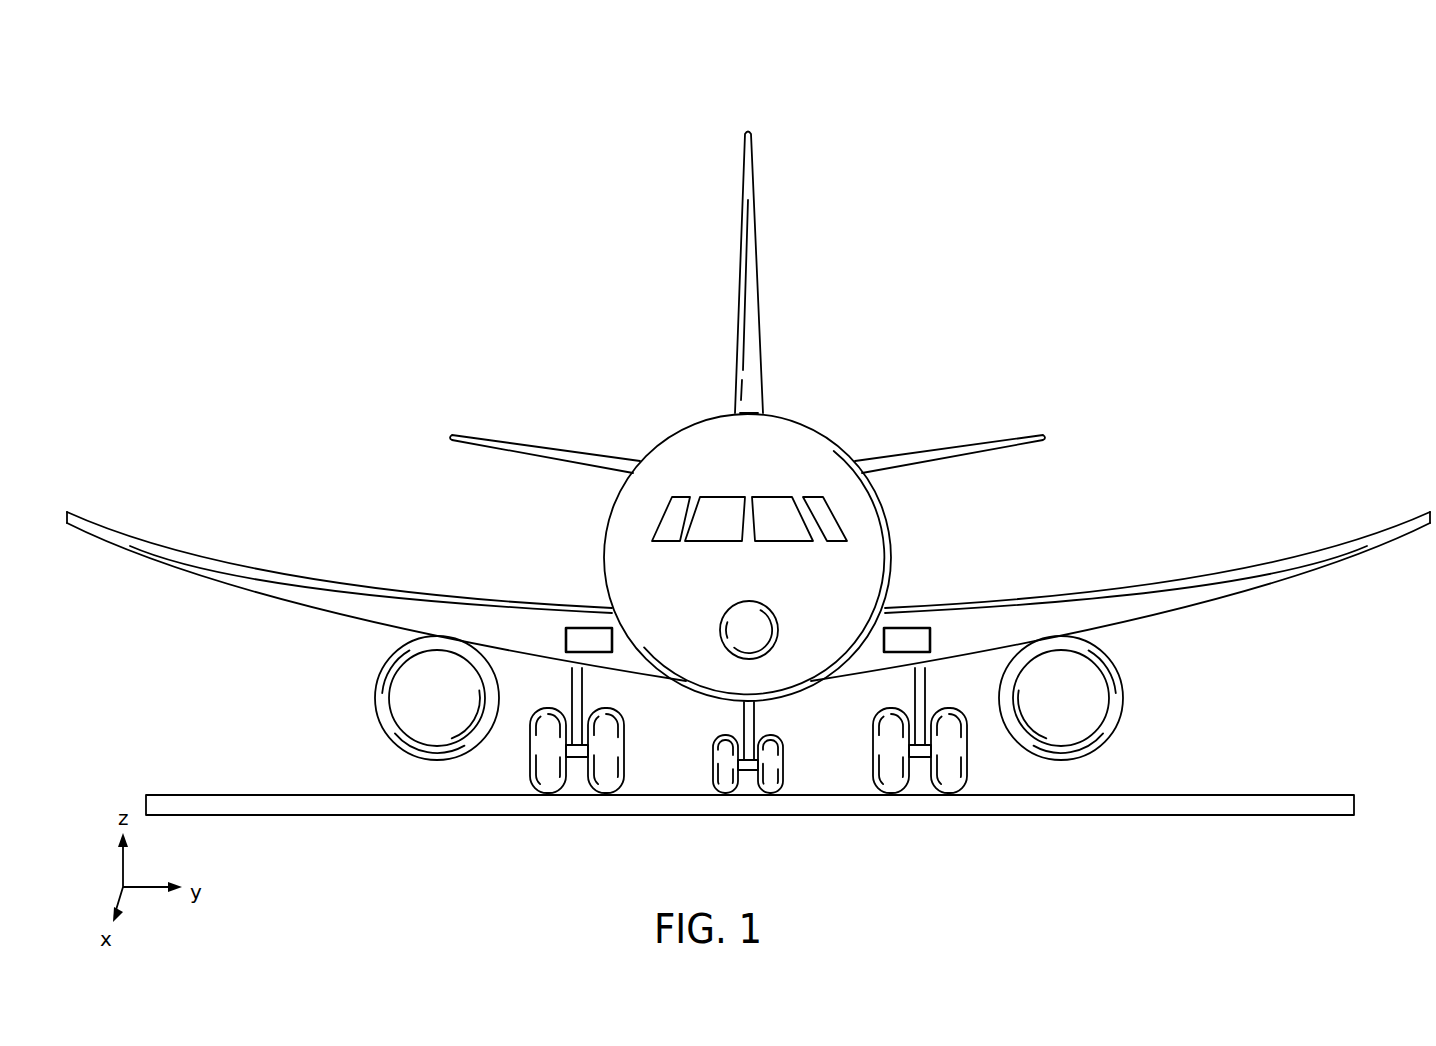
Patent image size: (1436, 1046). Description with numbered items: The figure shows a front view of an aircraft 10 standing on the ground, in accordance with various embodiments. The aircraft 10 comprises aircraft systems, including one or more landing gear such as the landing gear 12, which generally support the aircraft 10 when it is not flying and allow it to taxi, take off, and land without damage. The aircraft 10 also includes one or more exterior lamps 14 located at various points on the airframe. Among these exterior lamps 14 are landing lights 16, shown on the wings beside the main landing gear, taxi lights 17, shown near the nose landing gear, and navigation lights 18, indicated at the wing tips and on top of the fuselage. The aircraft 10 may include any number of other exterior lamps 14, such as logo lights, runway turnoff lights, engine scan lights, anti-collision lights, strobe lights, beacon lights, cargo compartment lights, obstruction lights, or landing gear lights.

The aircraft 10 is at (588, 140).
The landing gear 12 is at (816, 724).
The exterior lamps 14 is at (965, 556).
The landing lights 16 is at (582, 641).
The taxi lights 17 is at (747, 716).
The navigation lights 18 is at (80, 521).